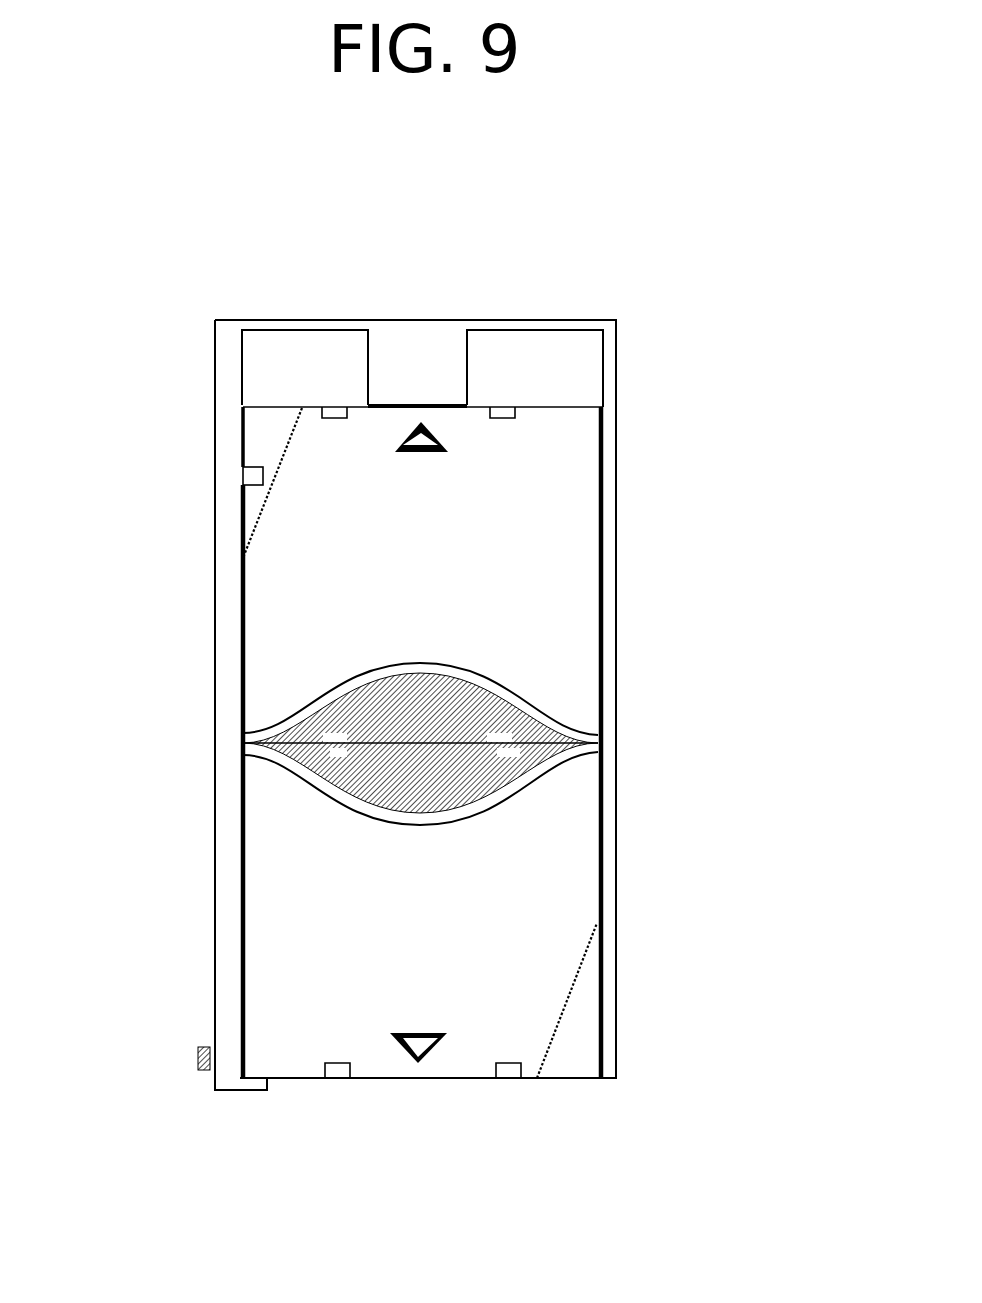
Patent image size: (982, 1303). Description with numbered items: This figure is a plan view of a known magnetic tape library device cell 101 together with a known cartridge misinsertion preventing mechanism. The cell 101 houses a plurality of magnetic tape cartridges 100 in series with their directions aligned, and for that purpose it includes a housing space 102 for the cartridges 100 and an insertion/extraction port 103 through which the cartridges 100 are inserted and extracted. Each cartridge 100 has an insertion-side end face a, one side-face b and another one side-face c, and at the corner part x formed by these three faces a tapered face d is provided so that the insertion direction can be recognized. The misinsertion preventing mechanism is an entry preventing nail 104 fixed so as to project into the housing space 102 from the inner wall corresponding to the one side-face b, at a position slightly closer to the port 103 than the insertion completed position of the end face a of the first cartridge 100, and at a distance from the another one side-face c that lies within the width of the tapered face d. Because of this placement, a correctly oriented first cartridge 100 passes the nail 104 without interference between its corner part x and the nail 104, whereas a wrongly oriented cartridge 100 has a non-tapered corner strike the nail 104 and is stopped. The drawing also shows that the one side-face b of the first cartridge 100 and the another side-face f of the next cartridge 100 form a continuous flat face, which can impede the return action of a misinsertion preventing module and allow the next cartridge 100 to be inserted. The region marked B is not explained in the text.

The magnetic tape cartridge 100 is at (567, 535).
The magnetic tape library device cell 101 is at (653, 452).
The housing space 102 is at (362, 635).
The insertion/extraction port 103 is at (435, 1099).
The entry preventing nail 104 is at (253, 467).
The insertion-side end face a is at (418, 405).
The one side-face b is at (243, 620).
The another one side-face c is at (533, 438).
The tapered face d is at (288, 437).
The corner part x is at (233, 418).
The left side portion B is at (232, 563).
The another side-face f is at (240, 895).